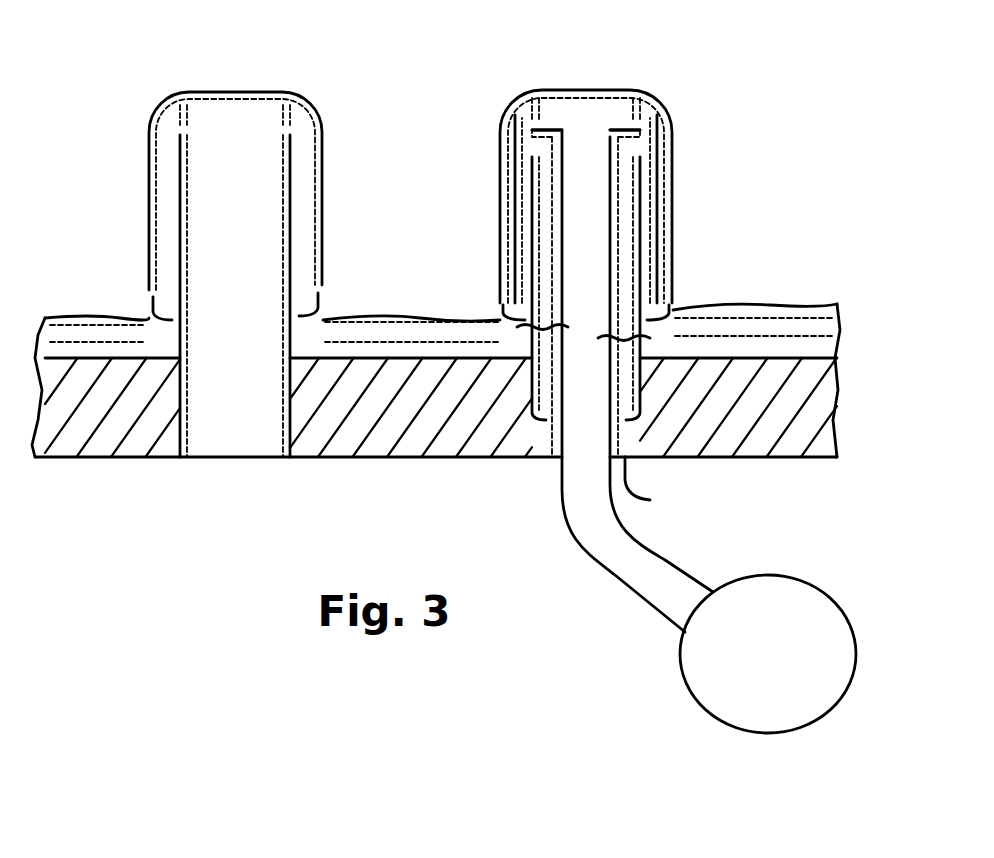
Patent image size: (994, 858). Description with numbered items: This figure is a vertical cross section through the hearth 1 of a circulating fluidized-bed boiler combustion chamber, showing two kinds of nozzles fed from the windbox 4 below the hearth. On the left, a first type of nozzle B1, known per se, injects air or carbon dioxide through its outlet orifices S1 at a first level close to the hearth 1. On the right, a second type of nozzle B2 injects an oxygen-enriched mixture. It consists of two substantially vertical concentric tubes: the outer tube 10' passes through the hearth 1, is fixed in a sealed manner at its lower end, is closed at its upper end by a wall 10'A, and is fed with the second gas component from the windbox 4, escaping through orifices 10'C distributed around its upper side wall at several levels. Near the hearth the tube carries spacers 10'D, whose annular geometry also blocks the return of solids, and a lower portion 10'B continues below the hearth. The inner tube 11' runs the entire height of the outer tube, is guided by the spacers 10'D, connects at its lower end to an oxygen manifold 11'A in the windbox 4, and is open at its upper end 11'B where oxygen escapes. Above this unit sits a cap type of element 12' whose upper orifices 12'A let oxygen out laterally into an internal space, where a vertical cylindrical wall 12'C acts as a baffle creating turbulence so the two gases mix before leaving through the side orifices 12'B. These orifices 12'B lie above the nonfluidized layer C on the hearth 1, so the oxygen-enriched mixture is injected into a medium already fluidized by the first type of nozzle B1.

The hearth 1 is at (767, 403).
The windbox 4 is at (343, 518).
The nonfluidized layer C is at (455, 342).
The first type of nozzle B1 is at (328, 112).
The second type of nozzle B2 is at (678, 99).
The outlet orifices S1 is at (152, 298).
The outer tube 10' is at (642, 306).
The wall 10'A is at (589, 91).
The lower portion of first member 10'B is at (685, 502).
The orifices 10'C is at (592, 209).
The spacers 10'D is at (689, 462).
The inner tube 11' is at (601, 381).
The oxygen manifold 11'A is at (768, 654).
The upper end 11'B is at (587, 80).
The cap type of element 12' is at (714, 220).
The orifices 12'A is at (577, 87).
The side orifices 12'B is at (585, 208).
The vertical cylindrical wall 12'C is at (642, 288).